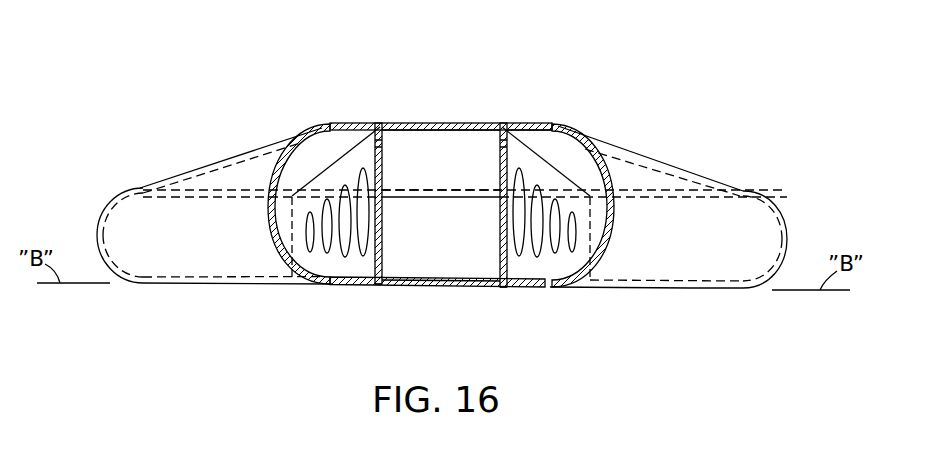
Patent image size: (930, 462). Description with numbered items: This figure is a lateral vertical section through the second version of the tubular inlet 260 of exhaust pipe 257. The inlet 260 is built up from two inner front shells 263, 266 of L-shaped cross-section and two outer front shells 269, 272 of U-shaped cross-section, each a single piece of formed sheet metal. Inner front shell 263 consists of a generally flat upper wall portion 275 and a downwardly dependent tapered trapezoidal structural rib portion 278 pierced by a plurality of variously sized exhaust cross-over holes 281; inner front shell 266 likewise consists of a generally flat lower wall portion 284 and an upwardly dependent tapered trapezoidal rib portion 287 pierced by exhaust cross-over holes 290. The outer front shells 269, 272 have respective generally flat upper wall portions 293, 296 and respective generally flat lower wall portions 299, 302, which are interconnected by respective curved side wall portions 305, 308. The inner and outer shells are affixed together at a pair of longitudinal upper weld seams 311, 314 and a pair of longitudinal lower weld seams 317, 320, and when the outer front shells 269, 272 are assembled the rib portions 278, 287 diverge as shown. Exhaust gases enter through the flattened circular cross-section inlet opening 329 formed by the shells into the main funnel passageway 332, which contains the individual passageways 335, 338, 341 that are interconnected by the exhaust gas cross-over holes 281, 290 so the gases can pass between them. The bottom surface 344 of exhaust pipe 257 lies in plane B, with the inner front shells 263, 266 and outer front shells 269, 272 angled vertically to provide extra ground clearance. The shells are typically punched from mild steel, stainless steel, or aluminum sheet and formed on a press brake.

The exhaust pipe 257 is at (527, 63).
The inlet 260 is at (432, 120).
The inner front shell 263 is at (478, 142).
The inner front shell 266 is at (452, 287).
The outer front shell 269 is at (96, 245).
The outer front shell 272 is at (787, 253).
The upper wall portion 275 is at (438, 147).
The rib portion 278 is at (357, 265).
The exhaust cross-over holes 281 is at (346, 233).
The lower wall portion 284 is at (472, 287).
The rib portion 287 is at (527, 268).
The exhaust cross-over holes 290 is at (537, 233).
The upper wall portion 293 is at (240, 178).
The upper wall portion 296 is at (635, 177).
The lower wall portion 299 is at (202, 284).
The lower wall portion 302 is at (713, 288).
The curved side wall portion 305 is at (100, 215).
The curved side wall portion 308 is at (780, 213).
The longitudinal upper weld seam 311 is at (377, 123).
The longitudinal upper weld seam 314 is at (503, 123).
The longitudinal lower weld seam 317 is at (380, 286).
The longitudinal lower weld seam 320 is at (505, 287).
The inlet opening 329 is at (417, 137).
The main funnel passageway 332 is at (403, 158).
The individual passageway 335 is at (333, 262).
The individual passageway 338 is at (435, 285).
The individual passageway 341 is at (547, 259).
The bottom surface 344 is at (653, 288).